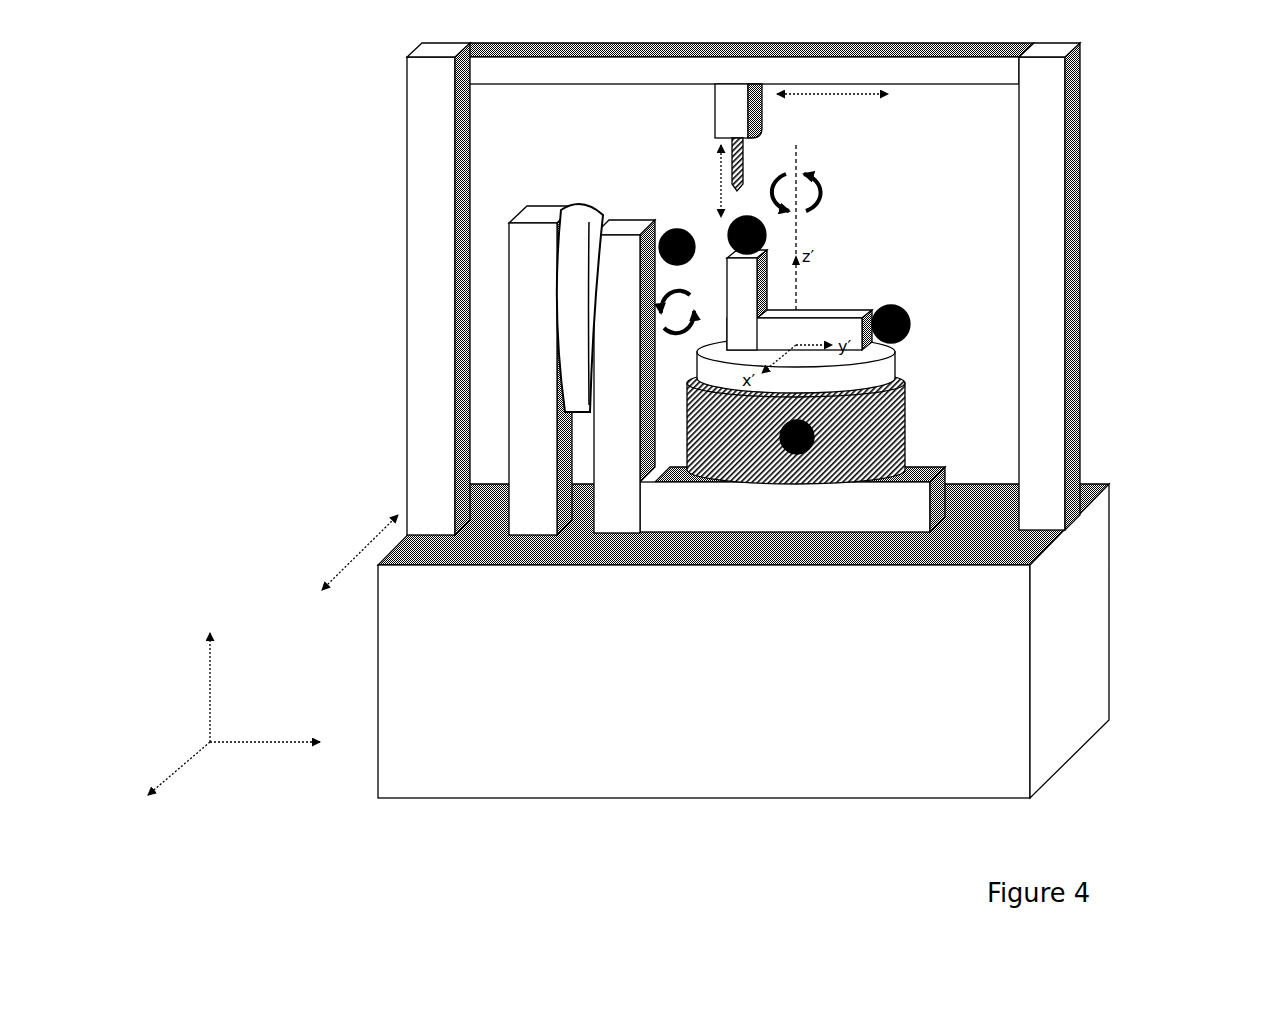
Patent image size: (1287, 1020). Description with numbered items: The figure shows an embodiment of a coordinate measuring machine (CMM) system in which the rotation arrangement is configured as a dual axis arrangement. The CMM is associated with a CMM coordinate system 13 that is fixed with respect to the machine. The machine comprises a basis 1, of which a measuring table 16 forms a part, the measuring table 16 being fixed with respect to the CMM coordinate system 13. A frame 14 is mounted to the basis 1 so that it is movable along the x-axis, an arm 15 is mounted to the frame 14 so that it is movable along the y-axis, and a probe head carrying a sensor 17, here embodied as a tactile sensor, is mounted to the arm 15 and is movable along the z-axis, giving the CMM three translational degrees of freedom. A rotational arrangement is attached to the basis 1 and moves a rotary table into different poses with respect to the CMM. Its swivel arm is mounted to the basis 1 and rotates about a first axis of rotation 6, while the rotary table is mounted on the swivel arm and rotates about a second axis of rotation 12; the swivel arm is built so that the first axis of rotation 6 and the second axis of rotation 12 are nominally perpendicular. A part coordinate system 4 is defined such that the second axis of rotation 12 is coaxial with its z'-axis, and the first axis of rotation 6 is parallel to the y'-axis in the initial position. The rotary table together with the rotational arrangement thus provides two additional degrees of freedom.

The basis 1 is at (828, 637).
The part coordinate system 4 is at (825, 354).
The first axis of rotation 6 is at (520, 369).
The second axis of rotation 12 is at (843, 263).
The CMM coordinate system 13 is at (243, 662).
The frame 14 is at (837, 289).
The arm 15 is at (821, 73).
The measuring table 16 is at (830, 477).
The sensor 17 is at (819, 151).